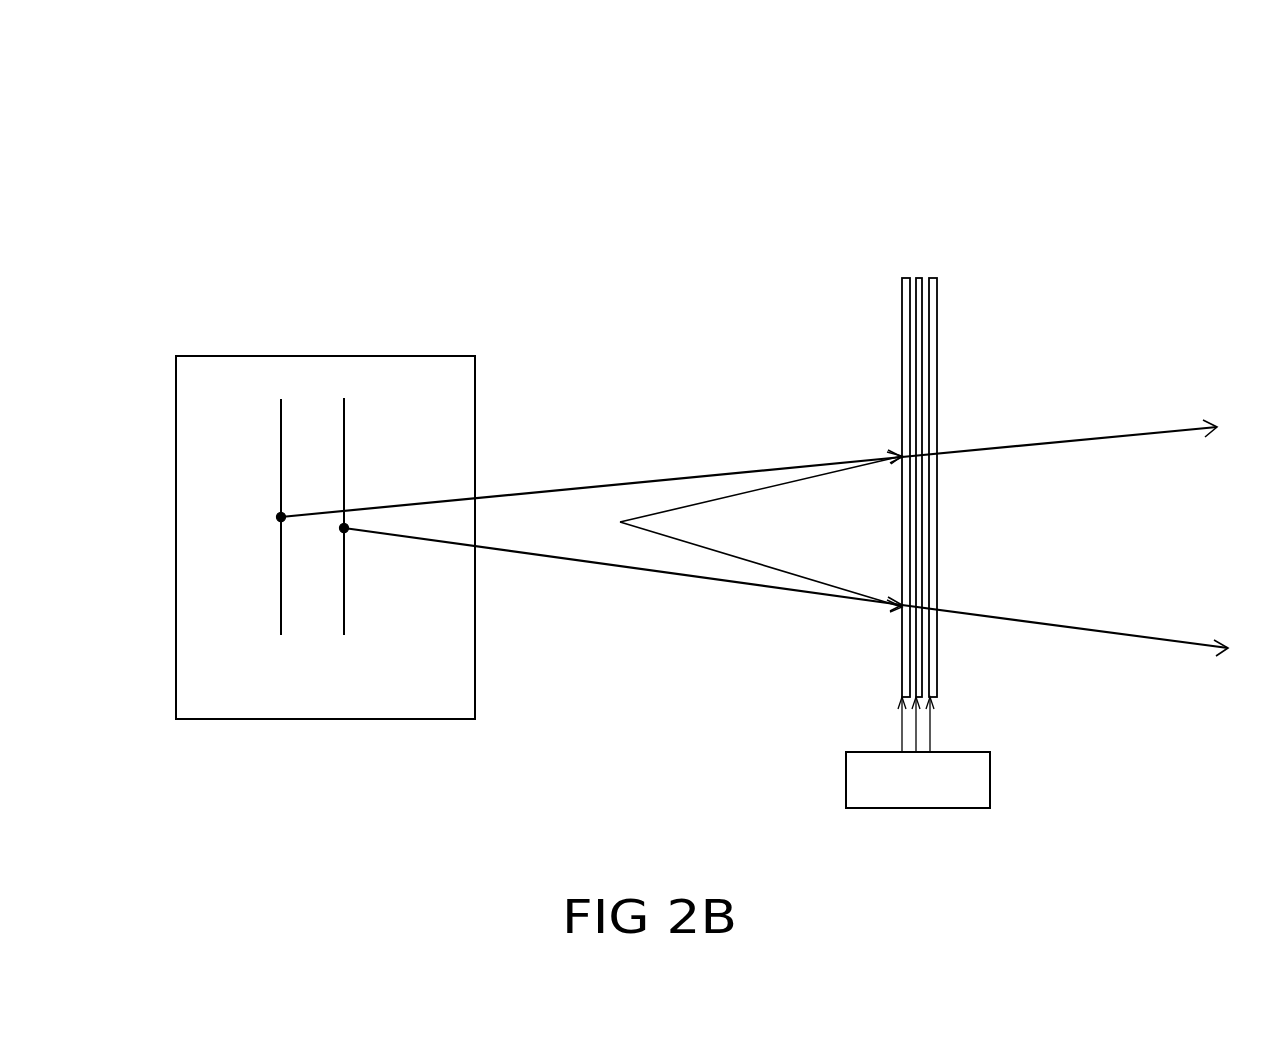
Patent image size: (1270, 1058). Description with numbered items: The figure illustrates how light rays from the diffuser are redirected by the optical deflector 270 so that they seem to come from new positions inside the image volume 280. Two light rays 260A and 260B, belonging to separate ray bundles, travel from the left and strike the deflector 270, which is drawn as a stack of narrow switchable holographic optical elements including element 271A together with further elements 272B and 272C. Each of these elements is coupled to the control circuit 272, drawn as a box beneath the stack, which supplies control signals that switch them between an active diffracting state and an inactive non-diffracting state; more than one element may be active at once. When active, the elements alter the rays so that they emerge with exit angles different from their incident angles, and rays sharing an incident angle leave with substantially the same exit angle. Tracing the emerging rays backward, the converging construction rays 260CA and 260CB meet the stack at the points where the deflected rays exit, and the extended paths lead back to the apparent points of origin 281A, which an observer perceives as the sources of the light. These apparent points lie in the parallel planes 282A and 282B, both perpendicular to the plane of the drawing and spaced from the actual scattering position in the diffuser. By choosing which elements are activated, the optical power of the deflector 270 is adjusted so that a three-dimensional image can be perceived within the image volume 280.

The image volume 280 is at (303, 342).
The apparent point of origin 281A is at (270, 515).
The plane 282A is at (273, 458).
The plane 282B is at (352, 460).
The light ray 260A is at (567, 475).
The light ray 260B is at (568, 573).
The first converging beam 260CA is at (755, 498).
The second converging beam 260CB is at (760, 553).
The optical deflector 270 is at (1168, 167).
The switchable holographic optical element 271A is at (903, 270).
The second grating element 272B is at (923, 270).
The third grating element 272C is at (940, 270).
The control circuit 272 is at (918, 780).